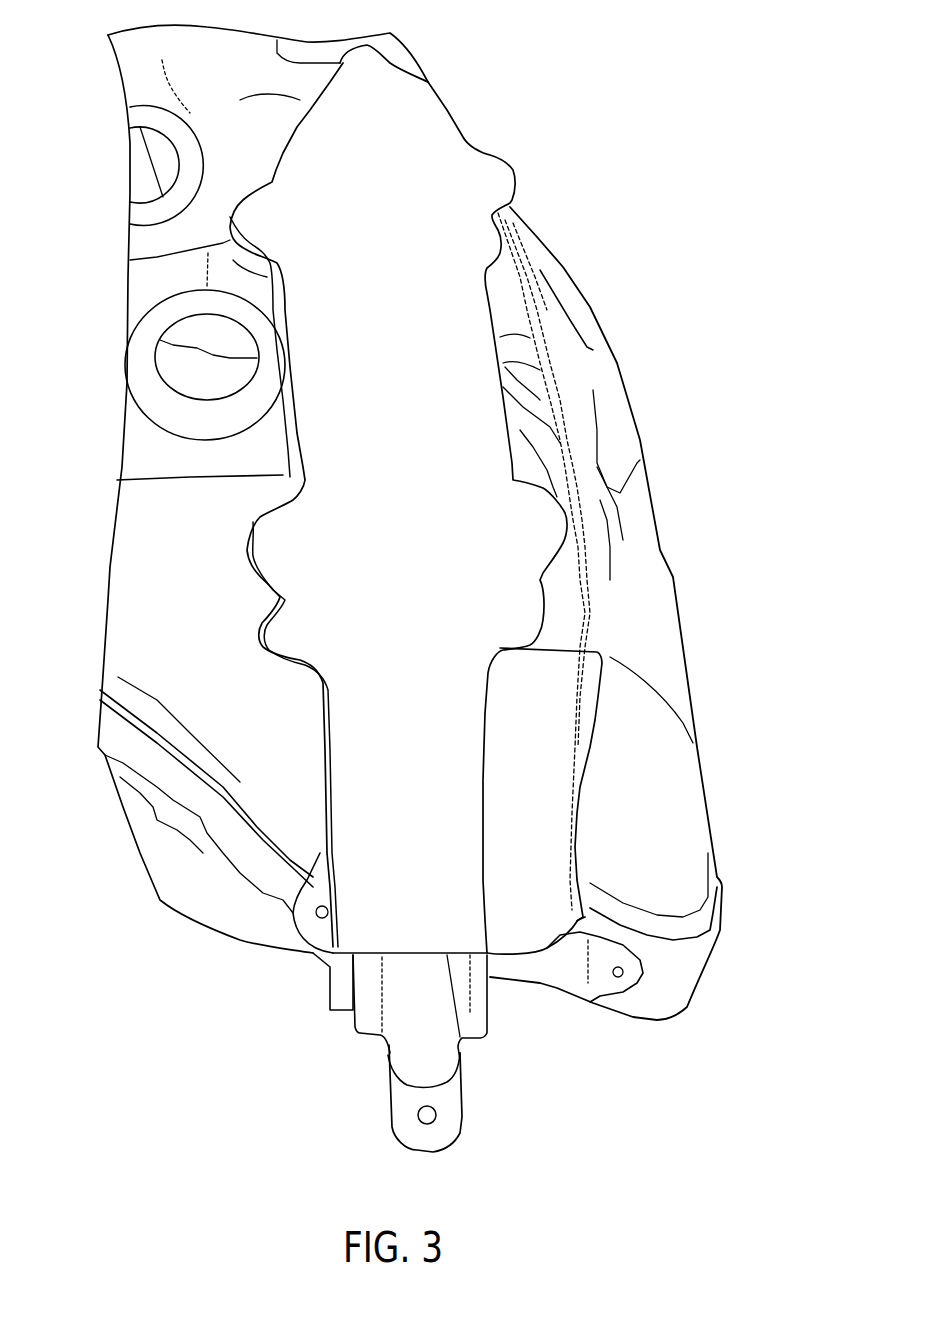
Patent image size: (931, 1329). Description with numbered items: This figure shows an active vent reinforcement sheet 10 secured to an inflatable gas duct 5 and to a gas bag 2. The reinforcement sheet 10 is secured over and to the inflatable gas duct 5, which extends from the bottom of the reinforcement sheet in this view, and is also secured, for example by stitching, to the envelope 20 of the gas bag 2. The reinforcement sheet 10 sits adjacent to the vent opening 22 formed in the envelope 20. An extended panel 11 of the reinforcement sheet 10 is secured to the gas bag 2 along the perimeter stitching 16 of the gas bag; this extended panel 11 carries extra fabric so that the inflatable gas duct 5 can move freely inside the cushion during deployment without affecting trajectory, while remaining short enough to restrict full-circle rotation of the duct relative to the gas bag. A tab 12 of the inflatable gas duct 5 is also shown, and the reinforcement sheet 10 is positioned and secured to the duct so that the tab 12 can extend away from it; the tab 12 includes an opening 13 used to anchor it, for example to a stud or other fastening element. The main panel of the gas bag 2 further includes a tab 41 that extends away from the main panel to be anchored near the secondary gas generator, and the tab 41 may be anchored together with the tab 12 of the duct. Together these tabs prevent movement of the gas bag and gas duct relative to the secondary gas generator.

The gas bag 2 is at (510, 317).
The inflatable gas duct 5 is at (395, 1038).
The active vent reinforcement sheet 10 is at (435, 187).
The extended panel 11 is at (540, 827).
The tab 12 is at (408, 1129).
The opening 13 is at (437, 1115).
The perimeter stitching 16 is at (523, 267).
The envelope 20 is at (127, 563).
The vent opening 22 is at (190, 373).
The tab 41 is at (560, 963).